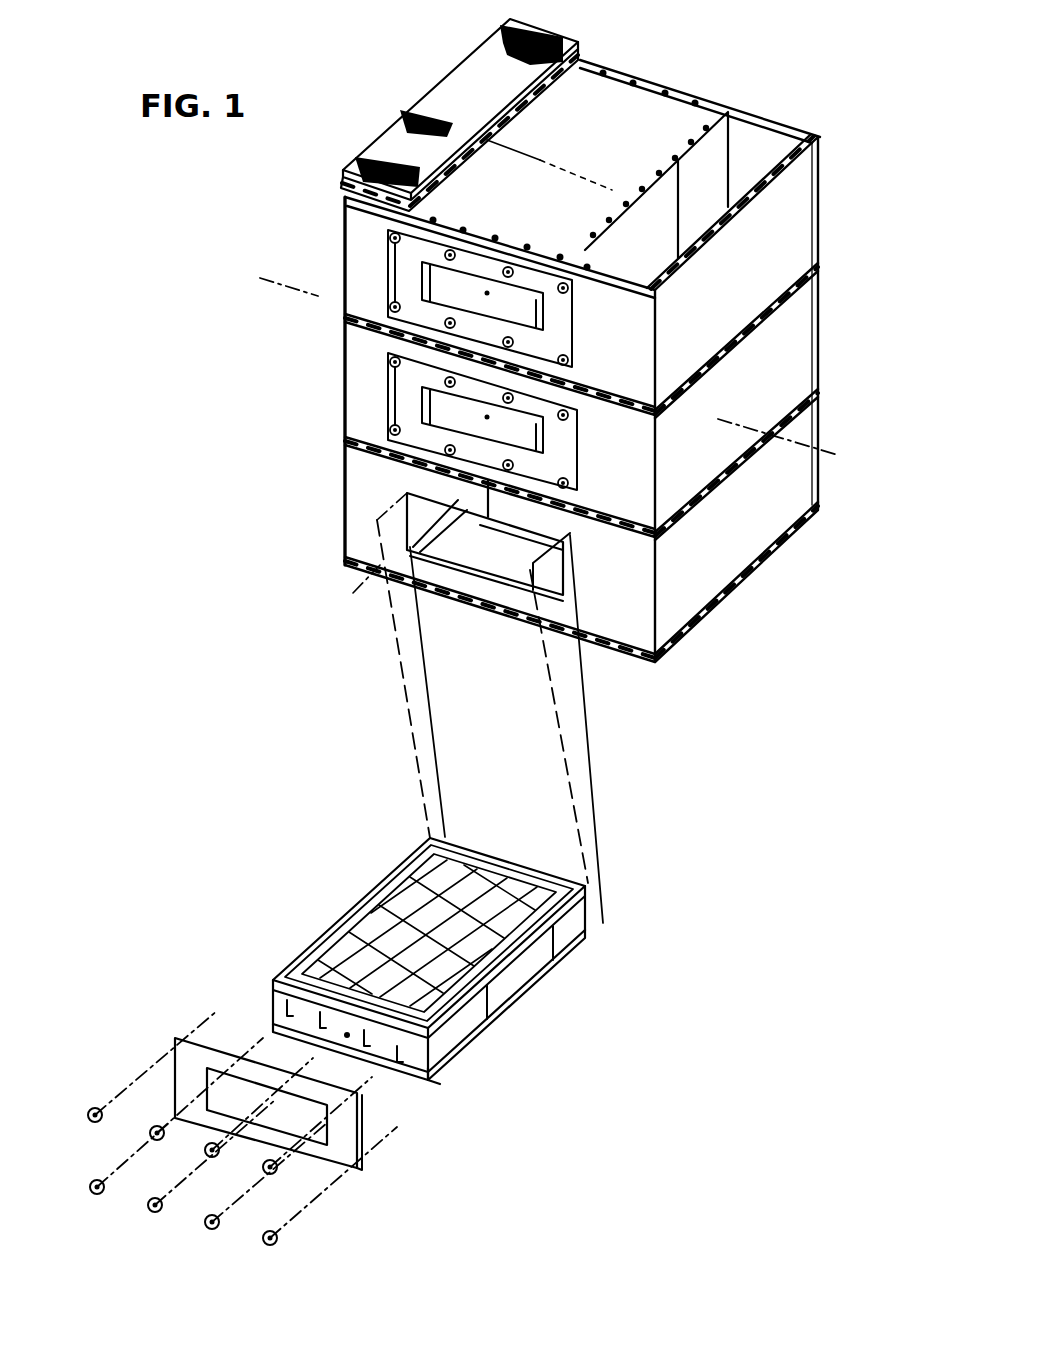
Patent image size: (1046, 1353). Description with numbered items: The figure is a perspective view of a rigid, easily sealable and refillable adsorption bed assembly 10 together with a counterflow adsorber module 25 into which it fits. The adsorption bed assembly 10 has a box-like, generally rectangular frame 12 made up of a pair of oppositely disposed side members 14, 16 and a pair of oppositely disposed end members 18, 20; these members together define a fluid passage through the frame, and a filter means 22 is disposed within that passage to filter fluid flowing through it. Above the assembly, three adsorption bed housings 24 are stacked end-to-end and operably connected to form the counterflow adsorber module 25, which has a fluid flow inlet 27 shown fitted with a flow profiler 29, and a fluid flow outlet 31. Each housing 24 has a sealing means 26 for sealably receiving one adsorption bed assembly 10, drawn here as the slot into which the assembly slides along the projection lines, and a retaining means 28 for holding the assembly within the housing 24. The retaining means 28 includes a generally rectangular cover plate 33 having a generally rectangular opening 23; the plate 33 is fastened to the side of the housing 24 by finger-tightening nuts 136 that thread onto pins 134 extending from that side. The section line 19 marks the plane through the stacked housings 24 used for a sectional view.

The adsorption bed assembly 10 is at (452, 278).
The frame 12 is at (510, 982).
The side member 14 is at (530, 953).
The side member 16 is at (397, 868).
The end member 18 is at (493, 857).
The section line 19- 19 is at (308, 236).
The end member 20 is at (430, 1084).
The filter means 22 is at (340, 935).
The opening 23 is at (235, 1095).
The adsorption bed housing 24 is at (345, 235).
The counterflow adsorber module 25 is at (504, 357).
The sealing means 26 is at (410, 577).
The fluid flow inlet 27 is at (463, 100).
The retaining means 28 is at (237, 1130).
The flow profiler 29 is at (537, 27).
The fluid flow outlet 31 is at (715, 158).
The cover plate 33 is at (360, 1155).
The pins 134 is at (517, 592).
The finger-tightening nuts 136 is at (280, 1243).